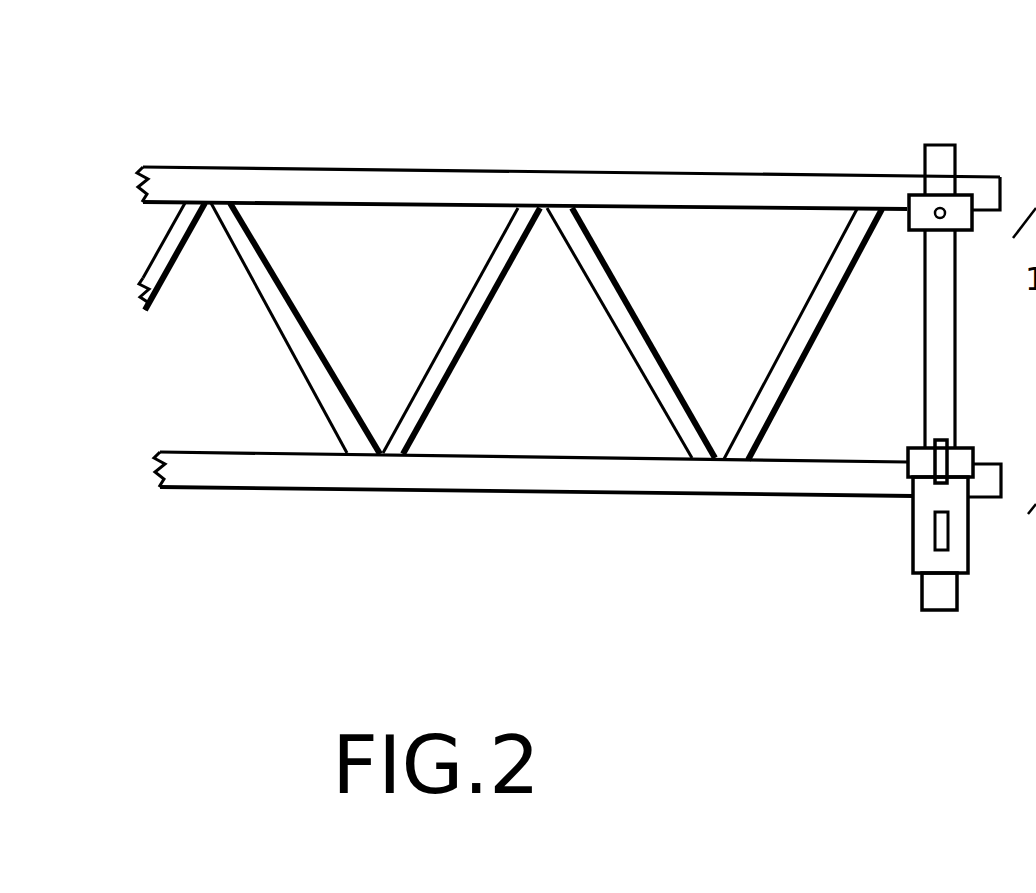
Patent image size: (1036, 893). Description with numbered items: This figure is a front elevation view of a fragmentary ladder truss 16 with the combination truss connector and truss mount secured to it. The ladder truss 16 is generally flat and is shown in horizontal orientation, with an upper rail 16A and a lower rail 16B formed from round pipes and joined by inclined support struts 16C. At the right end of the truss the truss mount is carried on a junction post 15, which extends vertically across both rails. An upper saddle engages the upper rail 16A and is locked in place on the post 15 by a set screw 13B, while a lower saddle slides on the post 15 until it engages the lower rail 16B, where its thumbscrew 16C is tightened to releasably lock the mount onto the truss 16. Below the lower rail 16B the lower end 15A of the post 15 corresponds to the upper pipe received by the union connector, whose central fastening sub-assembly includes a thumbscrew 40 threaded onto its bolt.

The ladder truss 16 is at (334, 166).
The upper rail 16A is at (680, 184).
The lower rail 16B is at (557, 480).
The inclined support struts 16C is at (304, 348).
The set screw 13B is at (935, 213).
The junction post 15 is at (1035, 325).
The thumbscrew 40 is at (938, 530).
The lower end of post 15A is at (943, 588).